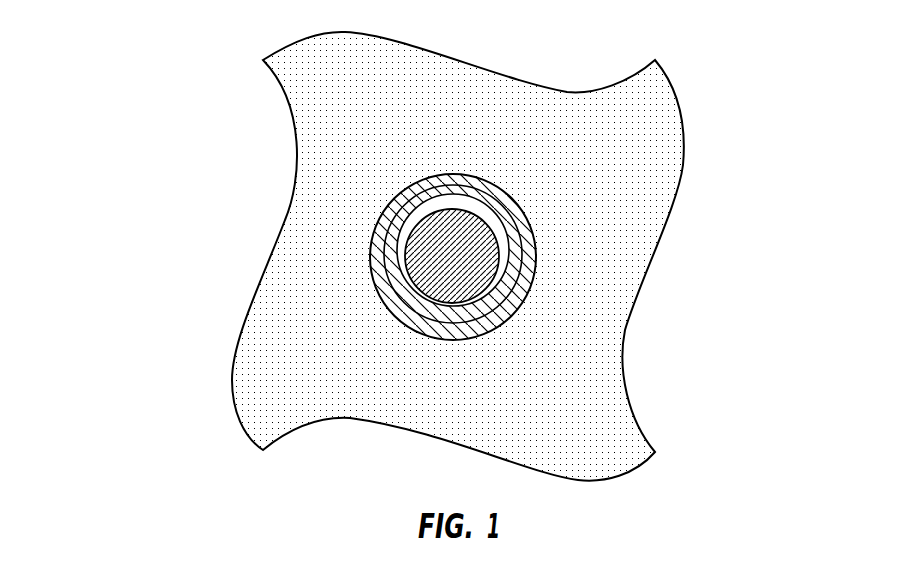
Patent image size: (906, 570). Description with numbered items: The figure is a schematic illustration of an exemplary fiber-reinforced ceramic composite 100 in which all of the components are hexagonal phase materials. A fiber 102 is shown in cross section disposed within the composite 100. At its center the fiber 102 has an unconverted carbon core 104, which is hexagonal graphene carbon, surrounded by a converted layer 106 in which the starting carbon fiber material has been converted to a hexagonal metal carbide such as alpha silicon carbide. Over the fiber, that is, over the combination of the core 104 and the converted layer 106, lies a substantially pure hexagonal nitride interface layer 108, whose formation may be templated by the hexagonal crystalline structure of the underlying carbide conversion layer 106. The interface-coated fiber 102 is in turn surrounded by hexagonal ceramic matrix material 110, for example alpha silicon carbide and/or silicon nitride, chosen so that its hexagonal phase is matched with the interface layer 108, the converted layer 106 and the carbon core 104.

The composite 100 is at (114, 104).
The fiber 102 is at (437, 158).
The unconverted carbon core 104 is at (463, 273).
The converted layer 106 is at (507, 250).
The hexagonal nitride interface layer 108 is at (517, 207).
The hexagonal ceramic matrix material 110 is at (595, 397).